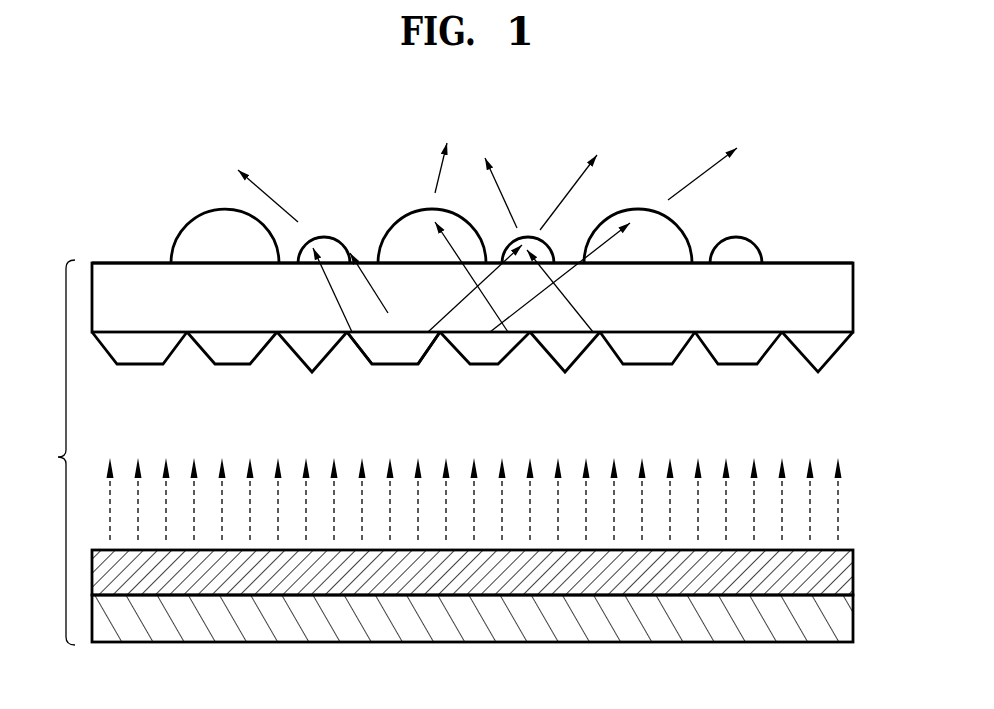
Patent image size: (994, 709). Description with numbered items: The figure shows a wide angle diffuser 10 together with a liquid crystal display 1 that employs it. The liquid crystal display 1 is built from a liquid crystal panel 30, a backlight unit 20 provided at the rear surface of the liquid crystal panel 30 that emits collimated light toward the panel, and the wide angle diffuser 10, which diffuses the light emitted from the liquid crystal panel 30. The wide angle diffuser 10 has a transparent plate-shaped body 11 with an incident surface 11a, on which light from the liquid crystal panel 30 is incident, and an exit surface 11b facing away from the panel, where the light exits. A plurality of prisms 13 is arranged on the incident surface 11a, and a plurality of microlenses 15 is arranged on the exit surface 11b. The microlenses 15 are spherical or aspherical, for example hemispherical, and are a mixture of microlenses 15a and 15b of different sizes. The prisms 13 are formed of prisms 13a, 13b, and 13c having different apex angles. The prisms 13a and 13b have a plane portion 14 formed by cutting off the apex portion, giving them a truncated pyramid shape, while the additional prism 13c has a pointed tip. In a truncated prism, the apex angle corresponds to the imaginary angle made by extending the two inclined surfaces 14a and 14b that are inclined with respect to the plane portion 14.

The liquid crystal display 1 is at (53, 452).
The wide angle diffuser 10 is at (122, 240).
The plate-shaped body 11 is at (847, 305).
The incident surface 11a is at (830, 340).
The exit surface 11b is at (808, 263).
The prisms 13 is at (643, 405).
The prism 13a is at (652, 354).
The prism 13b is at (740, 358).
The prism 13c is at (803, 357).
The plane portion 14 is at (395, 367).
The inclined surface 14a is at (358, 350).
The inclined surface 14b is at (433, 353).
The microlenses 15 is at (643, 100).
The microlens 15a is at (650, 230).
The microlens 15b is at (747, 250).
The backlight unit 20 is at (847, 622).
The liquid crystal panel 30 is at (847, 578).